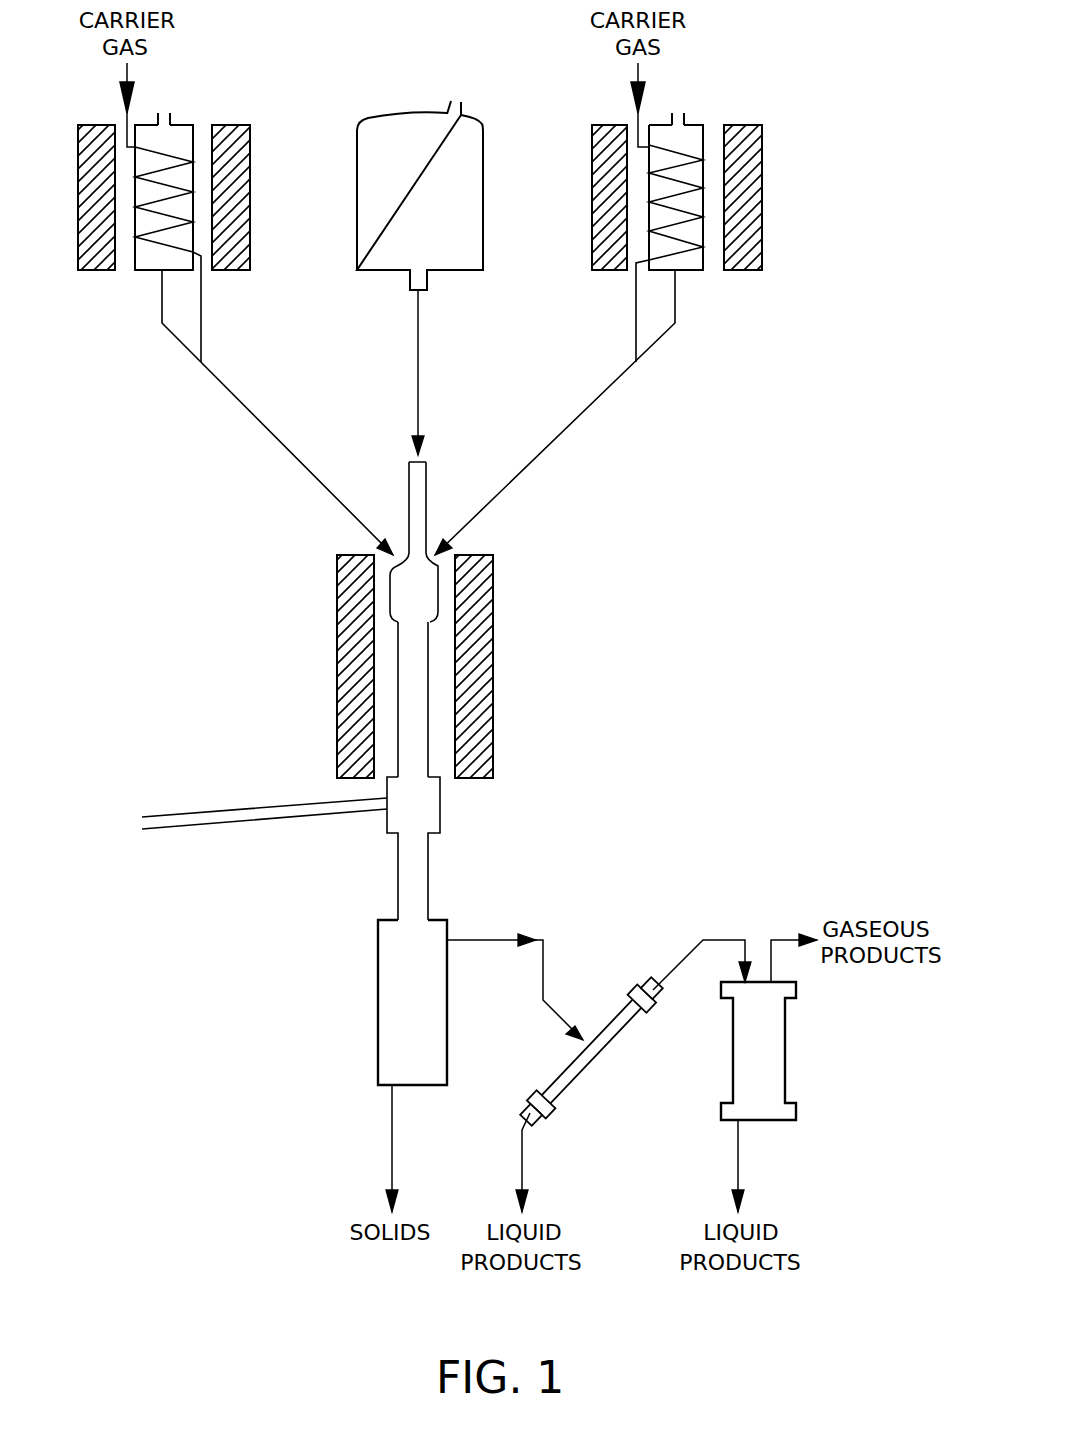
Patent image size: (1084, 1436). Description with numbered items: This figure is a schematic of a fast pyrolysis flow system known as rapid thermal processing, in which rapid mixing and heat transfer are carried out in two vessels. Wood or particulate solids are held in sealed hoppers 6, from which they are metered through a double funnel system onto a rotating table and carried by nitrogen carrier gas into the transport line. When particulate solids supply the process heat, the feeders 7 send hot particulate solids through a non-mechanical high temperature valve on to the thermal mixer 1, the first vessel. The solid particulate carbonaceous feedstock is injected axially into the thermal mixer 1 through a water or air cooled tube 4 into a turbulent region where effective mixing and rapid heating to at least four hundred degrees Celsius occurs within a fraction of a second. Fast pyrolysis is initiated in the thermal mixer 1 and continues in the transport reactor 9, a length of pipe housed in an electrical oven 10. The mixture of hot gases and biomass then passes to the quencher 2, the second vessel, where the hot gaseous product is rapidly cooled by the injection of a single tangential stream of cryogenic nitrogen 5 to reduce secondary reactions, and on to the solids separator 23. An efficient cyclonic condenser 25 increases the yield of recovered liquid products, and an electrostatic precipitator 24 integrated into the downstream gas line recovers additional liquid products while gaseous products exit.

The thermal mixer 1 is at (438, 590).
The quencher 2 is at (440, 812).
The cooled tube 4 is at (426, 478).
The tangential stream of cryogenic nitrogen 5 is at (212, 815).
The sealed hopper 6 is at (483, 162).
The feeder 7 is at (185, 125).
The transport reactor 9 is at (428, 698).
The electrical oven 10 is at (337, 637).
The solids separator 23 is at (378, 1000).
The electrostatic precipitator 24 is at (796, 1043).
The cyclonic condenser 25 is at (603, 1050).